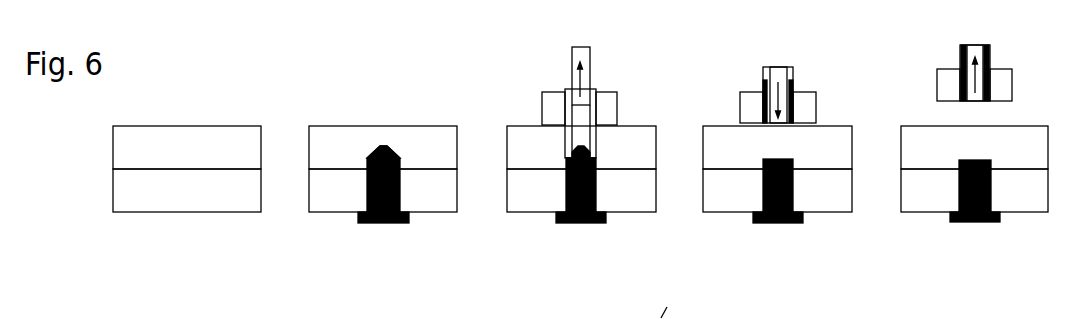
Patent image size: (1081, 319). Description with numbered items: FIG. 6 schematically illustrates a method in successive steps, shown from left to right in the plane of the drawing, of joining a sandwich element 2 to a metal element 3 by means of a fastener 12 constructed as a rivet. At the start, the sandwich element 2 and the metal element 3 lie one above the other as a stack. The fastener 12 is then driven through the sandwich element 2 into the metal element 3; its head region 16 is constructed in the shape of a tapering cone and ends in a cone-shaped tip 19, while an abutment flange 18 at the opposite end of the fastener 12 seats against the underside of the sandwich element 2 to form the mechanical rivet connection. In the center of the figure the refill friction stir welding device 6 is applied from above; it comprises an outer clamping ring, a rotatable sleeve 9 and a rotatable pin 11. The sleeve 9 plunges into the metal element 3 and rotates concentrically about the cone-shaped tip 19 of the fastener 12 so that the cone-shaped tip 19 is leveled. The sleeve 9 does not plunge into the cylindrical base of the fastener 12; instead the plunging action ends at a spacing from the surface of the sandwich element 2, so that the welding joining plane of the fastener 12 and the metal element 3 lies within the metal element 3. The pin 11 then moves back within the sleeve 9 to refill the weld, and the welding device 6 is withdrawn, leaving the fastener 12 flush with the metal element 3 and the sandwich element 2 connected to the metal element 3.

The sandwich element 2 is at (580, 190).
The metal element 3 is at (580, 147).
The refill friction stir welding device 6 is at (622, 72).
The rotatable sleeve 9 is at (598, 144).
The rotatable pin 11 is at (562, 51).
The fastener 12 is at (363, 182).
The head region 16 is at (403, 139).
The abutment flange 18 is at (404, 233).
The cone-shaped tip 19 is at (595, 178).